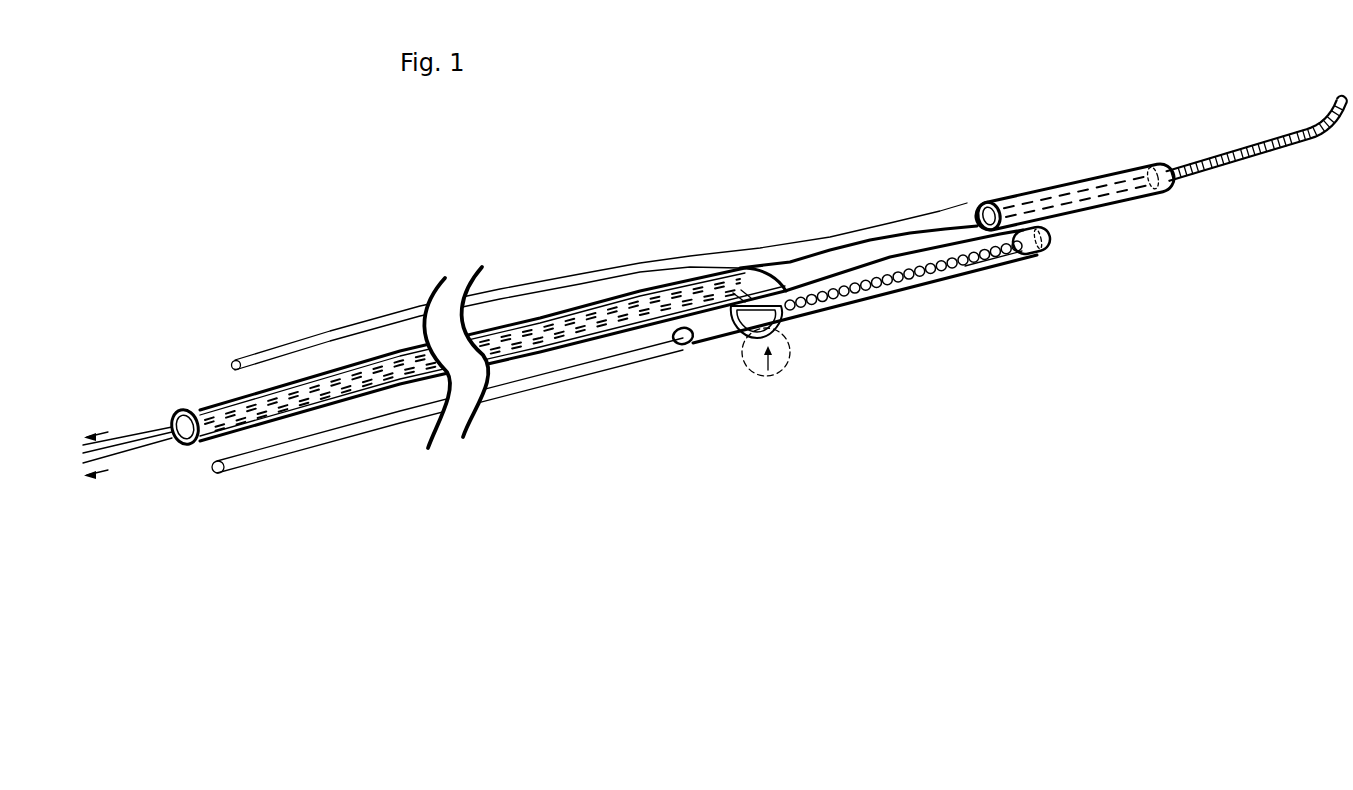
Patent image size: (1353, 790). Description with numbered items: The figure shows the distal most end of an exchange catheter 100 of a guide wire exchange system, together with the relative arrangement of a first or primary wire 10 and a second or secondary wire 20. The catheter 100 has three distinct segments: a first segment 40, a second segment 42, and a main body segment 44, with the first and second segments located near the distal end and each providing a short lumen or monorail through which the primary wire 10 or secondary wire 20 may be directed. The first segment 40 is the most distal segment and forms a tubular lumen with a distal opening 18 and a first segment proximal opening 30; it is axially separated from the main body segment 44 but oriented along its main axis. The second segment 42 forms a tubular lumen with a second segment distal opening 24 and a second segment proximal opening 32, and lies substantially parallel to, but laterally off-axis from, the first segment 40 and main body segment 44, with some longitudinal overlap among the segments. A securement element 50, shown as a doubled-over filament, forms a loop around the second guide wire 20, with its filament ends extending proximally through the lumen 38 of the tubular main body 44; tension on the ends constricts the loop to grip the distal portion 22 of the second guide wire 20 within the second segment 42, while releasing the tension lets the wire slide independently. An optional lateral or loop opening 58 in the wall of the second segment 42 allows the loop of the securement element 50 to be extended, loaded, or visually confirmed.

The primary wire 10 is at (318, 338).
The distal opening 18 is at (1178, 168).
The secondary wire 20 is at (345, 442).
The distal portion 22 is at (1012, 252).
The second segment distal opening 24 is at (1045, 238).
The first segment proximal opening 30 is at (977, 208).
The second segment proximal opening 32 is at (684, 348).
The lumen 38 is at (185, 434).
The first segment 40 is at (1063, 177).
The second segment 42 is at (907, 297).
The main body segment 44 is at (527, 322).
The securement element 50 is at (752, 345).
The lateral opening 58 is at (789, 320).
The exchange catheter 100 is at (715, 310).